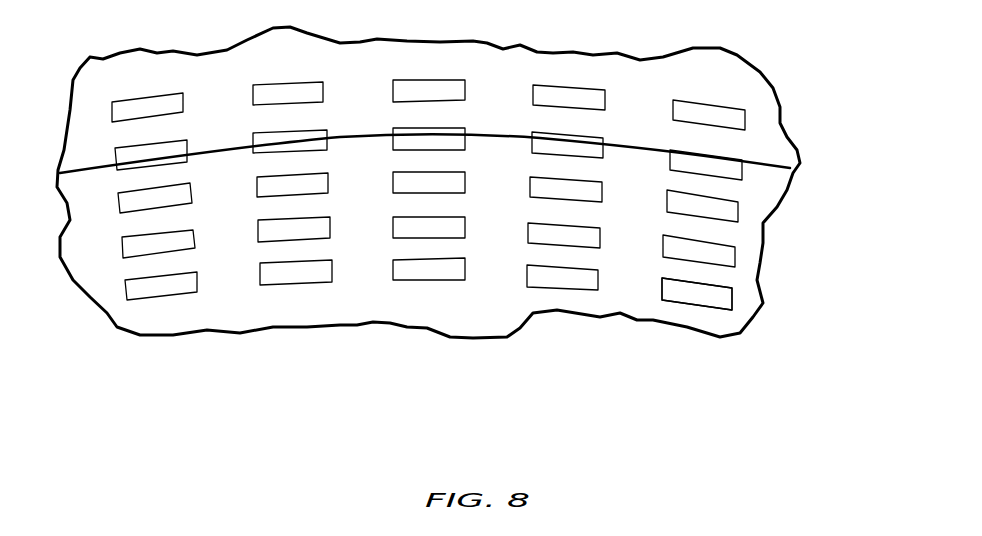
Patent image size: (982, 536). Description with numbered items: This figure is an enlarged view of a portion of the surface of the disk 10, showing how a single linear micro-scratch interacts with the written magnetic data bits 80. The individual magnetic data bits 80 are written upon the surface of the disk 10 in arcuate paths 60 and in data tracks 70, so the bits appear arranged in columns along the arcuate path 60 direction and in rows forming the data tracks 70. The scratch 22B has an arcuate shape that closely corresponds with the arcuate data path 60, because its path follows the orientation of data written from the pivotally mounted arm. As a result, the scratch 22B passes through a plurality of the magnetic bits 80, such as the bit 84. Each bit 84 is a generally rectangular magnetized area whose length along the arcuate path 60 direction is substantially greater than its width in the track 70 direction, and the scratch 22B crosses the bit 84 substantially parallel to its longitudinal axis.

The disk 10 is at (91, 57).
The scratch 22B is at (633, 143).
The arcuate path 60 is at (732, 295).
The data track 70 is at (663, 303).
The magnetic data bits 80 is at (285, 88).
The bit 84 is at (398, 131).